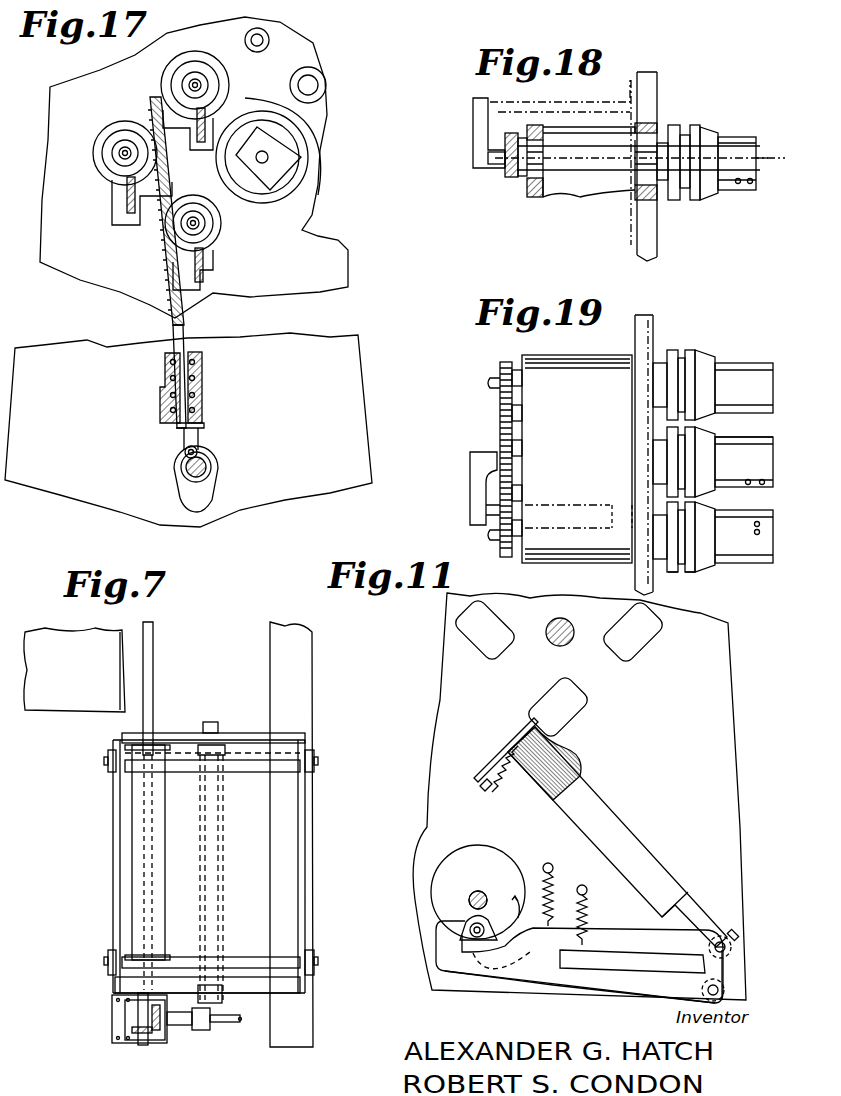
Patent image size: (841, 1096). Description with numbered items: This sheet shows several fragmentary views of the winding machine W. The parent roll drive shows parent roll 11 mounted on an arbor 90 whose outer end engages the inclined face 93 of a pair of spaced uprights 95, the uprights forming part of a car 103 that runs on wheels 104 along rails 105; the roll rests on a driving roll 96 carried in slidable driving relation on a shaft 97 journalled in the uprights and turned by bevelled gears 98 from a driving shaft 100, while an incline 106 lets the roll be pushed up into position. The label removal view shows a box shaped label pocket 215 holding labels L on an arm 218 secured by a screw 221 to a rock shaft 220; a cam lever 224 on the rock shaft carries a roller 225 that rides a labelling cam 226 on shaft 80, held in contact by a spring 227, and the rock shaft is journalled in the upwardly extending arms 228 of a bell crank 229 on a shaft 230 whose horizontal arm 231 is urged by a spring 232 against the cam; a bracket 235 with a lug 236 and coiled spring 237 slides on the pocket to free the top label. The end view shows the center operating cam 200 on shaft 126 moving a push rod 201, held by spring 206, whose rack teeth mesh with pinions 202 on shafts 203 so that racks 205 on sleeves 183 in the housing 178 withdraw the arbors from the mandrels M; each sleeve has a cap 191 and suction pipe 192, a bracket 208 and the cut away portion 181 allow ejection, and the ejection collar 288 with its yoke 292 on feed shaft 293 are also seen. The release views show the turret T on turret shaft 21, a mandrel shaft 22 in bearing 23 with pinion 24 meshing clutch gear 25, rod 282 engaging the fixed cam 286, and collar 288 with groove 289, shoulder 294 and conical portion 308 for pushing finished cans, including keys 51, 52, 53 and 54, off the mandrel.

In FIG. 17, the cut away portion 181 is at (305, 236).
In FIG. 17, the sleeve 183 is at (213, 70).
In FIG. 17, the housing 178 is at (106, 130).
In FIG. 17, the cap 191 is at (212, 78).
In FIG. 17, the pipe 192 is at (190, 84).
In FIG. 17, the bracket 208 is at (228, 112).
In FIG. 17, the rack 205 is at (210, 120).
In FIG. 17, the shaft 203 is at (182, 132).
In FIG. 17, the pinion 202 is at (152, 110).
In FIG. 17, the feed shaft 293 is at (320, 88).
In FIG. 17, the yoke 292 is at (326, 120).
In FIG. 17, the ejection collar 288 is at (312, 152).
In FIG. 18, the ejection collar 288 is at (674, 200).
In FIG. 19, the ejection collar 288 is at (698, 350).
In FIG. 17, the key bar 54 is at (290, 166).
In FIG. 18, the key bar 54 is at (754, 146).
In FIG. 19, the key bar 54 is at (744, 462).
In FIG. 11, the key bar 54 is at (632, 631).
In FIG. 17, the mandrel M is at (282, 176).
In FIG. 18, the mandrel M is at (756, 160).
In FIG. 11, the mandrel M is at (542, 680).
In FIG. 17, the push rod 201 is at (185, 367).
In FIG. 17, the spring 206 is at (198, 396).
In FIG. 17, the shaft 126 is at (208, 465).
In FIG. 17, the center operating cam 200 is at (192, 498).
In FIG. 18, the fixed cam 286 is at (484, 130).
In FIG. 19, the fixed cam 286 is at (480, 480).
In FIG. 18, the rod 282 is at (508, 170).
In FIG. 19, the rod 282 is at (488, 383).
In FIG. 18, the pinion 24 is at (522, 180).
In FIG. 19, the pinion 24 is at (504, 362).
In FIG. 18, the bearing 23 is at (530, 138).
In FIG. 18, the turret T is at (536, 200).
In FIG. 19, the turret T is at (608, 422).
In FIG. 18, the supporting shaft 22 is at (594, 178).
In FIG. 18, the conical portion 308 is at (690, 125).
In FIG. 19, the conical portion 308 is at (698, 578).
In FIG. 18, the peripheral groove 289 is at (694, 200).
In FIG. 19, the peripheral groove 289 is at (676, 350).
In FIG. 18, the shoulder 294 is at (715, 134).
In FIG. 19, the shoulder 294 is at (724, 442).
In FIG. 19, the clutch gear 25 is at (500, 414).
In FIG. 19, the key bar 51 is at (744, 388).
In FIG. 19, the key bar 53 is at (744, 536).
In FIG. 11, the key bar 53 is at (557, 706).
In FIG. 7, the incline 106 is at (74, 670).
In FIG. 7, the rail 105 is at (102, 736).
In FIG. 7, the parent roll 11 is at (316, 864).
In FIG. 7, the inclined face 93 is at (248, 740).
In FIG. 7, the upright 95 is at (180, 732).
In FIG. 7, the car 103 is at (234, 722).
In FIG. 7, the arbor 90 is at (208, 722).
In FIG. 7, the wheel 104 is at (316, 760).
In FIG. 7, the driving roll 96 is at (135, 880).
In FIG. 7, the shaft 97 is at (140, 1018).
In FIG. 7, the bevelled gear 98 is at (156, 1030).
In FIG. 7, the driving shaft 100 is at (240, 1030).
In FIG. 11, the winding machine W is at (736, 702).
In FIG. 11, the key 52 is at (484, 629).
In FIG. 11, the turret shaft 21 is at (572, 640).
In FIG. 11, the label pocket 215 is at (620, 828).
In FIG. 11, the label L is at (565, 760).
In FIG. 11, the bracket 235 is at (492, 762).
In FIG. 11, the lug 236 is at (487, 792).
In FIG. 11, the coiled spring 237 is at (512, 790).
In FIG. 11, the labelling cam 226 is at (496, 858).
In FIG. 11, the shaft 80 is at (471, 896).
In FIG. 11, the roller 225 is at (494, 905).
In FIG. 11, the cam lever 224 is at (654, 937).
In FIG. 11, the spring 227 is at (552, 882).
In FIG. 11, the spring 232 is at (588, 908).
In FIG. 11, the arm 218 is at (702, 902).
In FIG. 11, the screw 221 is at (738, 932).
In FIG. 11, the rock shaft 220 is at (728, 947).
In FIG. 11, the arm 228 is at (728, 970).
In FIG. 11, the shaft 230 is at (708, 990).
In FIG. 11, the arm 231 is at (552, 975).
In FIG. 11, the bell crank 229 is at (637, 992).